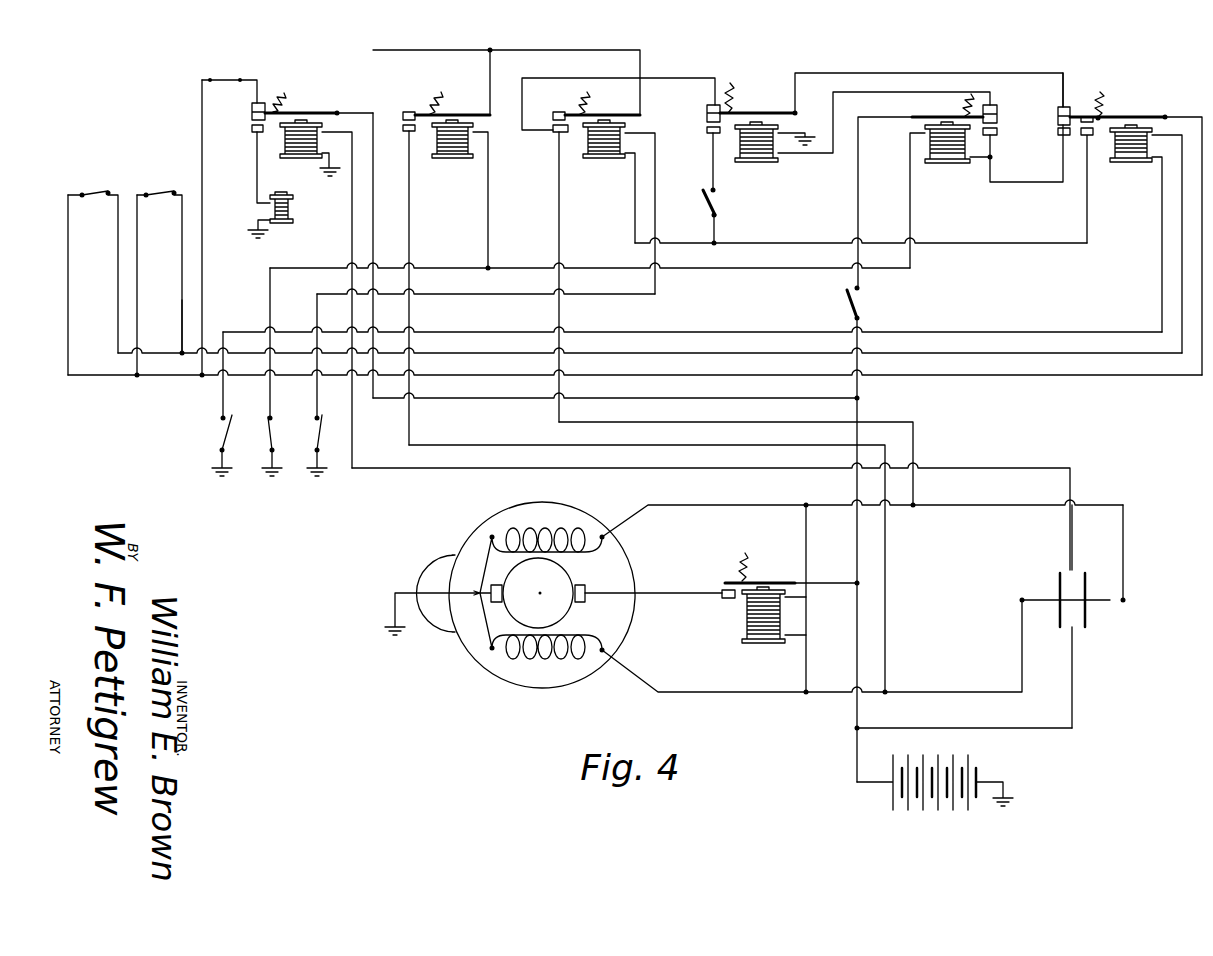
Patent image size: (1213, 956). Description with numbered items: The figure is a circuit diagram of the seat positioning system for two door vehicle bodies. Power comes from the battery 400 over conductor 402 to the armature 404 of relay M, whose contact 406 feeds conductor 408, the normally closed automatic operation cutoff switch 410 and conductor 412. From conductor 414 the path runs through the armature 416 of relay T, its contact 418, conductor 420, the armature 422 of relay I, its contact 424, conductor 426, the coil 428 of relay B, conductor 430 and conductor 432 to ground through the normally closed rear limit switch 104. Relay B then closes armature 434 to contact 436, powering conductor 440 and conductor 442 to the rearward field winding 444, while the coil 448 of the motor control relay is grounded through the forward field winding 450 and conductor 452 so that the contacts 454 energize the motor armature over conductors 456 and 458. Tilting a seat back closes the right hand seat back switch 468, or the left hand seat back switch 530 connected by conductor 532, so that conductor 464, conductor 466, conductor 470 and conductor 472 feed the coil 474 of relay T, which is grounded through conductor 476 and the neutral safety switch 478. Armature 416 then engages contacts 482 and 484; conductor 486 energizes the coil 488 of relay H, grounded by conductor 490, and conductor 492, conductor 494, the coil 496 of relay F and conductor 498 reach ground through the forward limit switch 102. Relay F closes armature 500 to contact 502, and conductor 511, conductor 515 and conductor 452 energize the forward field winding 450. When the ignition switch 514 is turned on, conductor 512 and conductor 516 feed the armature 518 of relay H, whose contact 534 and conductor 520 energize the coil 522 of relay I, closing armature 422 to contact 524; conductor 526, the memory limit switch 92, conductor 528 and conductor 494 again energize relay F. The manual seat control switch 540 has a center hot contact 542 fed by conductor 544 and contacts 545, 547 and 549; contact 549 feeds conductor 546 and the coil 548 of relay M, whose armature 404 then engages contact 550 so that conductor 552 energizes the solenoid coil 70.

The solenoid coil 70 is at (270, 213).
The memory limit switch 92 is at (706, 200).
The forward limit switch 102 is at (312, 435).
The rear limit switch 104 is at (275, 425).
The battery 400 is at (890, 790).
The conductor 402 is at (373, 205).
The armature of relay M 404 is at (300, 110).
The contact of relay M 406 is at (252, 112).
The conductor 408 is at (284, 92).
The automatic operation cutoff switch 410 is at (247, 78).
The conductor 412 is at (202, 110).
The conductor 414 is at (1195, 383).
The armature of relay T 416 is at (1100, 112).
The contact of relay T 418 is at (1068, 107).
The conductor 420 is at (895, 73).
The armature of relay I 422 is at (733, 110).
The contact of relay I 424 is at (707, 112).
The conductor 426 is at (660, 78).
The coil of relay B 428 is at (440, 150).
The conductor 430 is at (488, 187).
The conductor 432 is at (453, 265).
The armature of relay B 434 is at (442, 95).
The contact of relay B 436 is at (408, 125).
The conductor 440 is at (412, 238).
The conductor 442 is at (828, 695).
The rearward field winding 444 is at (510, 650).
The coil of motor control relay 448 is at (745, 618).
The forward field winding 450 is at (515, 530).
The conductor 452 is at (680, 502).
The motor control relay contacts 454 is at (722, 588).
The conductor 456 is at (832, 580).
The conductor 458 is at (665, 592).
The conductor 464 is at (175, 377).
The conductor 466 is at (140, 215).
The right hand seat back switch 468 is at (158, 192).
The conductor 470 is at (182, 285).
The conductor 472 is at (457, 351).
The coil of relay T 474 is at (1128, 155).
The conductor 476 is at (1160, 260).
The neutral safety switch 478 is at (228, 432).
The contact of relay T 482 is at (1063, 136).
The contact of relay T 484 is at (1087, 150).
The conductor 486 is at (1030, 184).
The coil of relay H 488 is at (948, 155).
The conductor 490 is at (912, 262).
The conductor 492 is at (1040, 245).
The conductor 494 is at (633, 193).
The coil of relay F 496 is at (590, 150).
The conductor 498 is at (470, 293).
The armature of relay F 500 is at (589, 92).
The contact of relay F 502 is at (557, 133).
The conductor 511 is at (559, 177).
The conductor 512 is at (860, 318).
The ignition switch 514 is at (847, 290).
The conductor 515 is at (975, 507).
The conductor 516 is at (857, 212).
The armature of relay H 518 is at (950, 115).
The conductor 520 is at (855, 92).
The coil of relay I 522 is at (758, 155).
The contact of relay I 524 is at (713, 133).
The conductor 526 is at (712, 165).
The conductor 528 is at (716, 232).
The left hand seat back switch 530 is at (94, 192).
The conductor 532 is at (105, 268).
The contact of relay H 534 is at (997, 131).
The manual seat control switch 540 is at (1087, 573).
The center hot contact 542 is at (1073, 630).
The conductor 544 is at (1018, 728).
The contact of manual switch 545 is at (1020, 600).
The conductor 546 is at (352, 210).
The contact of manual switch 547 is at (1125, 598).
The coil of relay M 548 is at (305, 150).
The contact of manual switch 549 is at (1070, 568).
The contact of relay M 550 is at (252, 130).
The conductor 552 is at (256, 165).